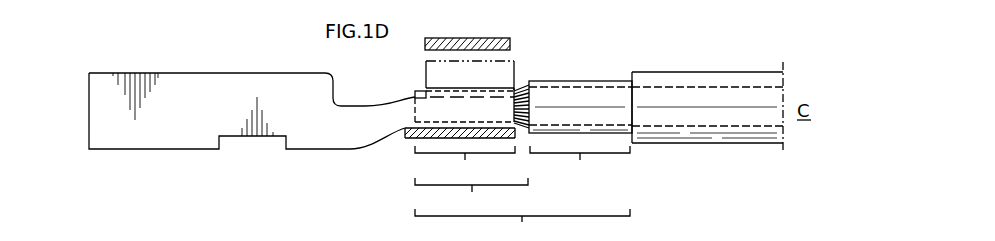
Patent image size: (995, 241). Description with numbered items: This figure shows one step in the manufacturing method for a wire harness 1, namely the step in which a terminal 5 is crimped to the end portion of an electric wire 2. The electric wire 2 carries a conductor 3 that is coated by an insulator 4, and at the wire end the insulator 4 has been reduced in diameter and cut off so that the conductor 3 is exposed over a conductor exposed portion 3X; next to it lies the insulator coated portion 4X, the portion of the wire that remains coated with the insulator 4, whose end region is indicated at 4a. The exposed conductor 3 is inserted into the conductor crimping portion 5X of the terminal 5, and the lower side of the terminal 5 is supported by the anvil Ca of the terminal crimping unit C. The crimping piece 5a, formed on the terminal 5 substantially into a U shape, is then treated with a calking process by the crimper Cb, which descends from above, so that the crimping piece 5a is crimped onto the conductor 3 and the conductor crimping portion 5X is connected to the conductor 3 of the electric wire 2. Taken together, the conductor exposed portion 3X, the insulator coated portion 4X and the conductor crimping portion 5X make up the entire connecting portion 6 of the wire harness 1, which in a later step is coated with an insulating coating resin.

The wire harness 1 is at (244, 232).
The electric wire 2 is at (773, 80).
The conductor 3 is at (522, 88).
The insulator 4 is at (687, 80).
The sheath end portion 4a is at (582, 82).
The terminal 5 is at (228, 68).
The crimping piece 5a is at (440, 88).
The connecting portion 6 is at (522, 225).
The terminal crimping unit C is at (420, 40).
The anvil Ca is at (405, 130).
The crimper Cb is at (490, 44).
The conductor crimping portion 5X is at (465, 166).
The insulator coated portion 4X is at (580, 93).
The conductor exposed portion 3X is at (471, 196).